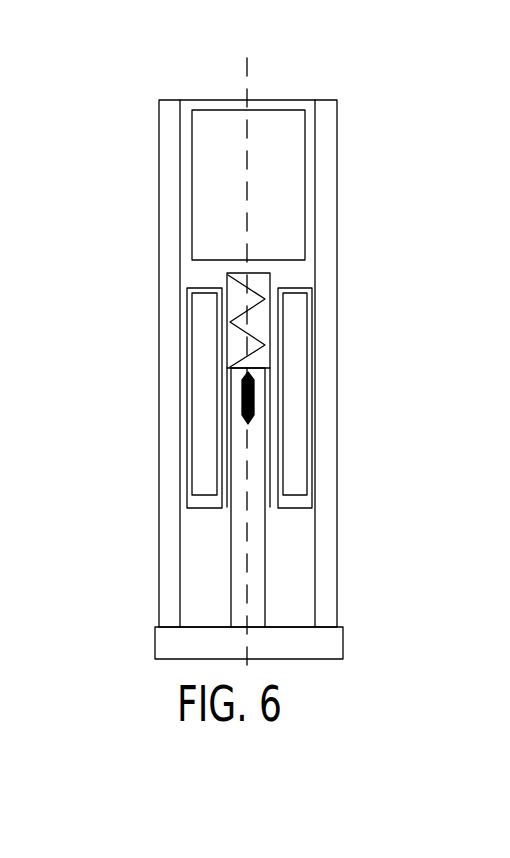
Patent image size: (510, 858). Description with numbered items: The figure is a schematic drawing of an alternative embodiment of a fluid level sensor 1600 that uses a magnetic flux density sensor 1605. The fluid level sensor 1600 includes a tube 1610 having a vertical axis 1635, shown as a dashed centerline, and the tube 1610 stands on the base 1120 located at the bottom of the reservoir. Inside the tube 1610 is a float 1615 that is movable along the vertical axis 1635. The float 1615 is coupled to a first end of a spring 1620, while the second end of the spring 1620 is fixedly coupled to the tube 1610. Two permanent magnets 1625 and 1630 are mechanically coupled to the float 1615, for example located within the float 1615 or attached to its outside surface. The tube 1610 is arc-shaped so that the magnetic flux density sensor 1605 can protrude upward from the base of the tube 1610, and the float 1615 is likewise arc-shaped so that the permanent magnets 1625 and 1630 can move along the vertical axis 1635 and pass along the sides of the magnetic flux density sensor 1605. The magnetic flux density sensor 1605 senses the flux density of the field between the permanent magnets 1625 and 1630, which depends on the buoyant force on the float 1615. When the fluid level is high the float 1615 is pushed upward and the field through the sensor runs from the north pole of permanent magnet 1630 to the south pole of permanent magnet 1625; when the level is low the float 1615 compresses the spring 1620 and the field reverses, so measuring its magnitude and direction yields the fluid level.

The fluid level sensor 1600 is at (138, 67).
The magnetic flux density sensor 1605 is at (250, 388).
The tube 1610 is at (330, 193).
The float 1615 is at (203, 163).
The spring 1620 is at (230, 326).
The permanent magnet 1625 is at (198, 392).
The permanent magnet 1630 is at (298, 445).
The vertical axis 1635 is at (252, 92).
The base 1120 is at (168, 643).